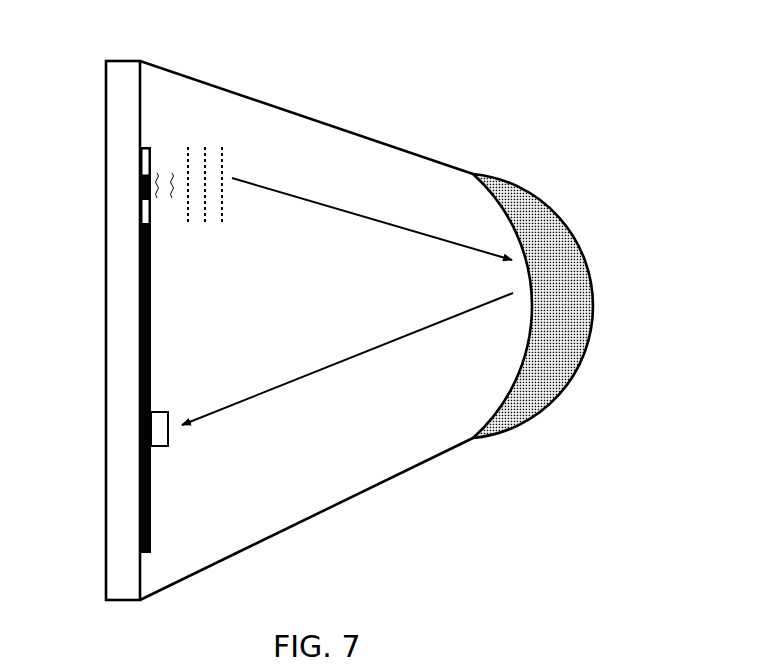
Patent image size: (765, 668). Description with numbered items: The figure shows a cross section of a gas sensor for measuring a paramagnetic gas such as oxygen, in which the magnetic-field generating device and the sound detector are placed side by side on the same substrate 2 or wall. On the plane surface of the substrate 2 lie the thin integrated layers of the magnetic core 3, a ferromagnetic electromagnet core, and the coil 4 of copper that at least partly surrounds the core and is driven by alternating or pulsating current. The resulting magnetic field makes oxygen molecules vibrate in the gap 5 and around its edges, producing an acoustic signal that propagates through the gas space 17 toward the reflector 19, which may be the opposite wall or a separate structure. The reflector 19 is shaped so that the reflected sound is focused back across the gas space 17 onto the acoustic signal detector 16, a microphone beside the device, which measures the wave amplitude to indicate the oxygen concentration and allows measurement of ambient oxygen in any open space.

The substrate 2 is at (122, 257).
The magnetic core 3 is at (140, 365).
The coil 4 is at (138, 520).
The gap 5 is at (140, 187).
The acoustic signal detector 16 is at (156, 430).
The gas space 17 is at (393, 435).
The reflector 19 is at (594, 306).